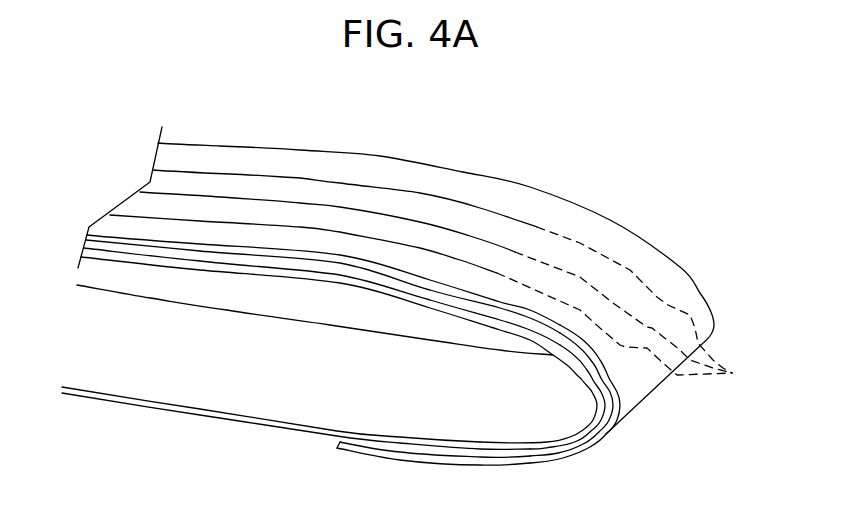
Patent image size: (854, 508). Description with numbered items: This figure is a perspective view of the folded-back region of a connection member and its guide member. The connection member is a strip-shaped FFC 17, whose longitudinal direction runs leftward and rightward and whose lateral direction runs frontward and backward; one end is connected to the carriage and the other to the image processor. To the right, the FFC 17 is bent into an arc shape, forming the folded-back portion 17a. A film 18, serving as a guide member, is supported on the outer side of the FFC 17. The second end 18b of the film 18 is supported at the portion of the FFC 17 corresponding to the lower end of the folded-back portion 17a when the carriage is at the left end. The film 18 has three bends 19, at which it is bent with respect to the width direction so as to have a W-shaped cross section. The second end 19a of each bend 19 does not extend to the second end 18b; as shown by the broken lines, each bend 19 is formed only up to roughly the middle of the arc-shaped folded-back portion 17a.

The FFC 17 is at (158, 382).
The folded-back portion 17a is at (596, 417).
The film 18 is at (500, 195).
The second end 18b is at (337, 448).
The bends 19 is at (370, 237).
The second end 19a is at (637, 306).